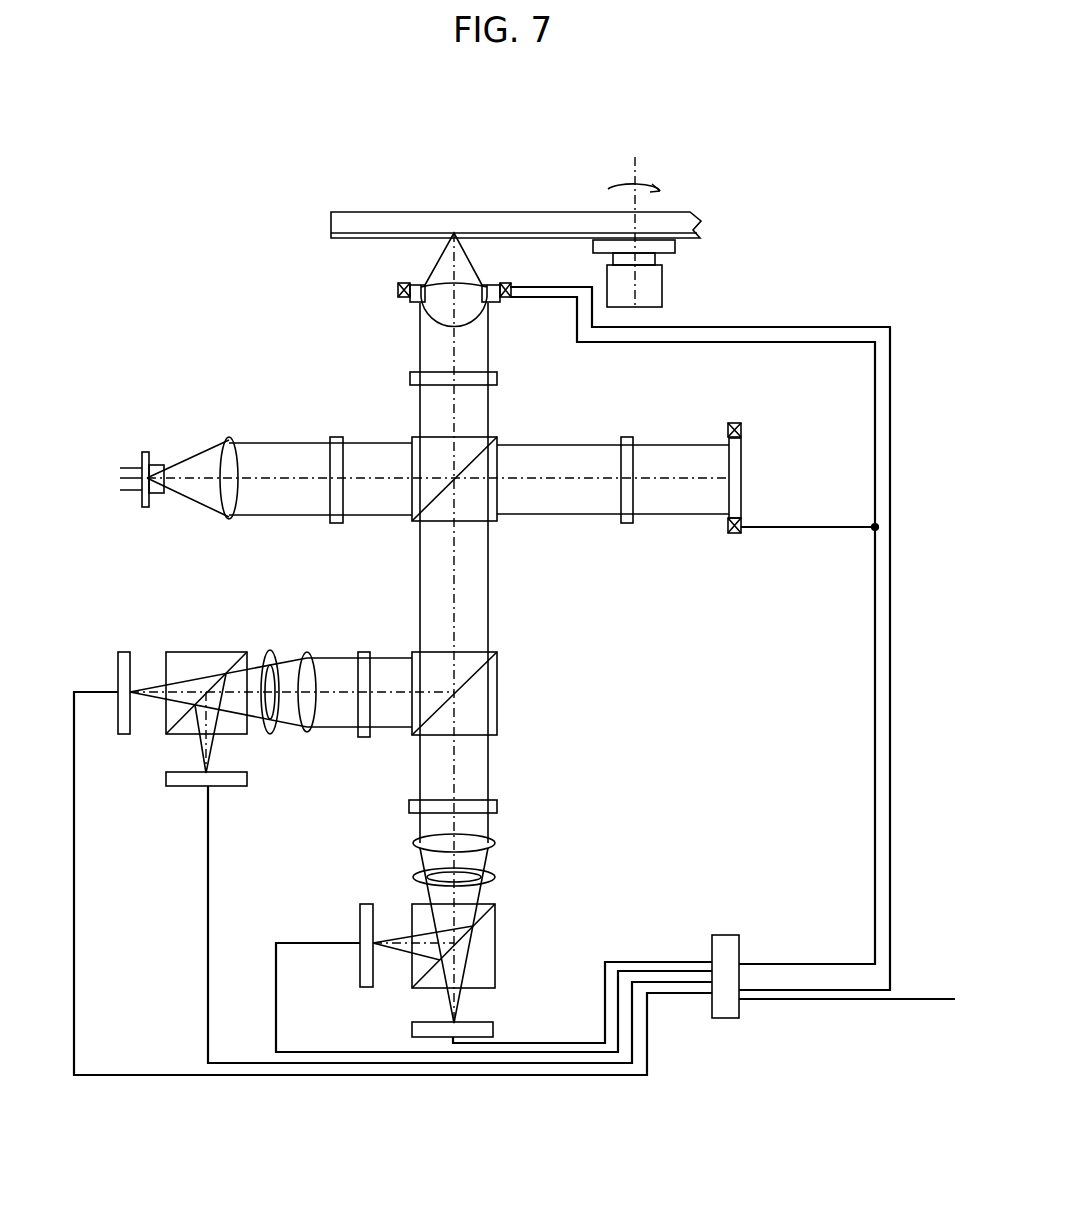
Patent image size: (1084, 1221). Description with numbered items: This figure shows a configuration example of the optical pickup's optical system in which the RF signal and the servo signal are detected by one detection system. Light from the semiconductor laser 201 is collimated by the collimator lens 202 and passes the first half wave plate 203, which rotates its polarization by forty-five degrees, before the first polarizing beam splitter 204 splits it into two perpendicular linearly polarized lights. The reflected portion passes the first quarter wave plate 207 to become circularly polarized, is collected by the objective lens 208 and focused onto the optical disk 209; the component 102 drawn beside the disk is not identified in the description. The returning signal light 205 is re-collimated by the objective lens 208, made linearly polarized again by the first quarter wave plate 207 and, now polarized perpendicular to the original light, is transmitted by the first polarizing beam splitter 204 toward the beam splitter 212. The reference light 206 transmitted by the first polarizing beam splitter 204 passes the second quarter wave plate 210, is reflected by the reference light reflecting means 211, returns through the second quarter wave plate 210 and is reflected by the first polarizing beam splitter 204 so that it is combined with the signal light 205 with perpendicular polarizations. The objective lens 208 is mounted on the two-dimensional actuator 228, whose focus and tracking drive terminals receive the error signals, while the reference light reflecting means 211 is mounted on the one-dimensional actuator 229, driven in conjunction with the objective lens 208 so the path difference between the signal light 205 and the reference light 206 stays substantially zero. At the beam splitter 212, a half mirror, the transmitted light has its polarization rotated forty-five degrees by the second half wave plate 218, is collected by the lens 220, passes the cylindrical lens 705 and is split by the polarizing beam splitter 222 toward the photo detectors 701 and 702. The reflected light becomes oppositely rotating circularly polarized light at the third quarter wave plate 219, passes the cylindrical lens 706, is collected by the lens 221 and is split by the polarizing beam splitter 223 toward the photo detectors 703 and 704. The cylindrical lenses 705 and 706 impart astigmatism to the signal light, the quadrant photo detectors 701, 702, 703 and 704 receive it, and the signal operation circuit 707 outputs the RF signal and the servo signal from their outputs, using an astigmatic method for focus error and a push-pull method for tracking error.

The spindle motor 102 is at (663, 285).
The semiconductor laser 201 is at (142, 460).
The collimator lens 202 is at (228, 438).
The first half wave plate 203 is at (337, 435).
The first polarizing beam splitter 204 is at (412, 453).
The signal light 205 is at (488, 343).
The reference light 206 is at (548, 445).
The first quarter wave plate 207 is at (422, 372).
The objective lens 208 is at (440, 315).
The optical disk 209 is at (331, 224).
The second quarter wave plate 210 is at (627, 437).
The reference light reflecting means 211 is at (743, 462).
The beam splitter 212 is at (497, 722).
The second half wave plate 218 is at (497, 805).
The third quarter wave plate 219 is at (364, 737).
The lens 220 is at (495, 843).
The lens 221 is at (307, 737).
The polarizing beam splitter 222 is at (495, 943).
The polarizing beam splitter 223 is at (212, 652).
The two-dimensional actuator 228 is at (512, 284).
The one-dimensional actuator 229 is at (743, 428).
The photo detector 701 is at (412, 1028).
The photo detector 702 is at (360, 940).
The photo detector 703 is at (118, 663).
The photo detector 704 is at (238, 786).
The cylindrical lens 705 is at (495, 877).
The cylindrical lens 706 is at (277, 655).
The signal operation circuit 707 is at (725, 1018).